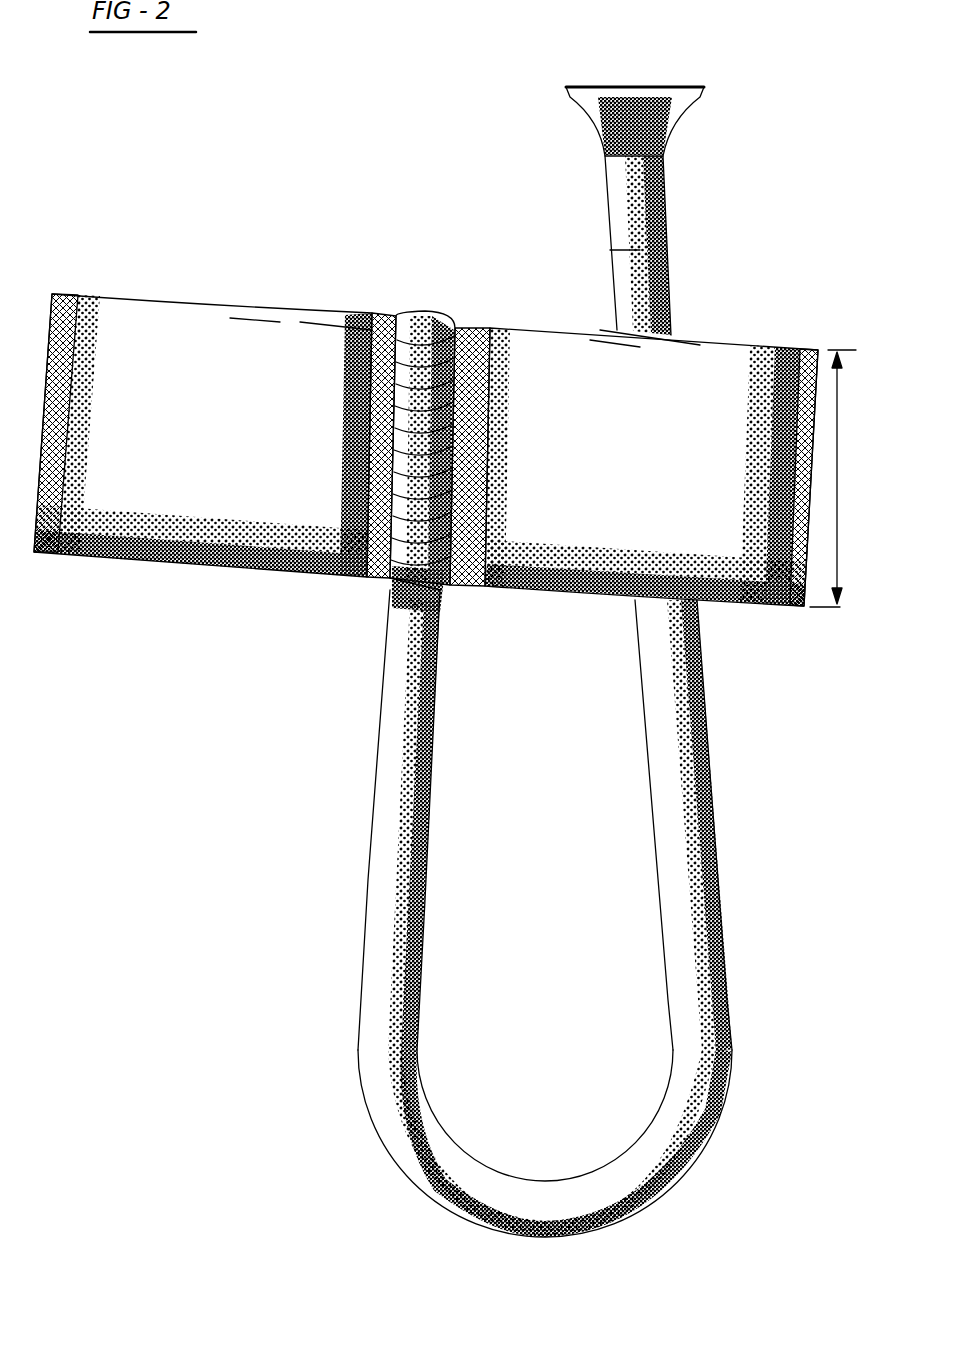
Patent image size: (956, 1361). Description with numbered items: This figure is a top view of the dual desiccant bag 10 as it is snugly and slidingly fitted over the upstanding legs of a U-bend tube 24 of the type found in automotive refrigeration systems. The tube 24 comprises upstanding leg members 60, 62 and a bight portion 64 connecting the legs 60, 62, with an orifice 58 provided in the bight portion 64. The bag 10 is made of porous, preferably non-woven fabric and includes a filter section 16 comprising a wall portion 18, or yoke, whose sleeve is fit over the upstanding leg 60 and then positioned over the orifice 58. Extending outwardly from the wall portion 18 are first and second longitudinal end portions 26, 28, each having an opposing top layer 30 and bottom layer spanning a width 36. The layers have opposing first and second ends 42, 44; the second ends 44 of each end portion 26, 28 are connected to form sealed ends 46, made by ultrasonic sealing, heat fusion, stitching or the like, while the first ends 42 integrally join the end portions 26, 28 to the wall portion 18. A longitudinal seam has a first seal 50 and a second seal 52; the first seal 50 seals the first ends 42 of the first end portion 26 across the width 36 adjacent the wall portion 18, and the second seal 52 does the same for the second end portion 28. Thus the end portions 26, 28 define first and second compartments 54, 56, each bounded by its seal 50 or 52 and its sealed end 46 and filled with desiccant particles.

The desiccant bag 10 is at (447, 426).
The filter section 16 is at (436, 408).
The wall portion 18 is at (432, 322).
The U-bend tube 24 is at (488, 686).
The first longitudinal end portion 26 is at (447, 426).
The second longitudinal end portion 28 is at (683, 318).
The top layer 30 is at (265, 318).
The width 36 is at (842, 465).
The first ends 42 is at (383, 312).
The second ends 44 is at (78, 292).
The sealed ends 46 is at (38, 553).
The first seal 50 is at (368, 585).
The second seal 52 is at (483, 325).
The first compartment 54 is at (243, 432).
The second compartment 56 is at (598, 462).
The orifice 58 is at (555, 1238).
The upstanding leg member 60 is at (365, 940).
The upstanding leg member 62 is at (702, 698).
The bight portion 64 is at (680, 1172).